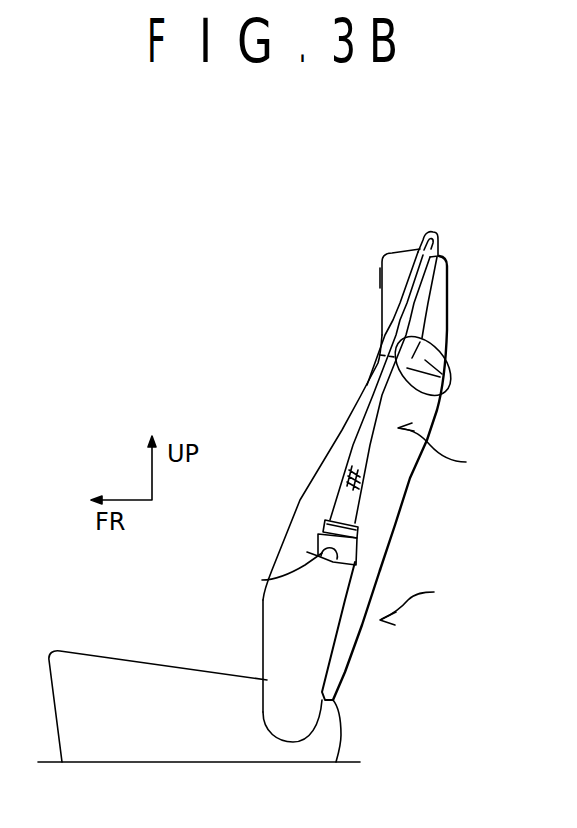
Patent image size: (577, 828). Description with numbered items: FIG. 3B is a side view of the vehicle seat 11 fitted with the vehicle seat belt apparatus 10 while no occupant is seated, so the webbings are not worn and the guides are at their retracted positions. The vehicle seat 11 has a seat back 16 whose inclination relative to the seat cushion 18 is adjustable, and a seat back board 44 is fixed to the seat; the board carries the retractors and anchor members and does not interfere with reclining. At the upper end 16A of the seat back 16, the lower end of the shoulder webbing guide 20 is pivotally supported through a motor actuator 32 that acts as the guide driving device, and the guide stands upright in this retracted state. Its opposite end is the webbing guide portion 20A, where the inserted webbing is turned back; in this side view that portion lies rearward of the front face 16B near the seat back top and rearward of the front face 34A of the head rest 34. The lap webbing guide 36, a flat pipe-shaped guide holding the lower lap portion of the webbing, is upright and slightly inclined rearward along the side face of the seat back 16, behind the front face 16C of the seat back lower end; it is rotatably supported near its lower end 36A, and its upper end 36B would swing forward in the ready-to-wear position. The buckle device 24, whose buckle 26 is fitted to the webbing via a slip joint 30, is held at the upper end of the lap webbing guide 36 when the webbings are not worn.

The vehicle seat belt apparatus 10 is at (280, 260).
The vehicle seat 11 is at (425, 600).
The seat back 16 is at (283, 555).
The upper end of the seat back 16A is at (380, 355).
The front face near the upper end of the seat back 16B is at (367, 388).
The front face of the lower end of the seat back 16C is at (295, 502).
The seat cushion 18 is at (162, 684).
The shoulder webbing guide 20 is at (436, 284).
The webbing guide portion 20A is at (440, 243).
The buckle device 24 is at (357, 547).
The buckle 26 is at (409, 553).
The slip joint 30 is at (358, 528).
The motor actuator 32 is at (445, 393).
The head rest 34 is at (436, 324).
The front face of the head rest 34A is at (381, 288).
The lap webbing guide 36 is at (314, 644).
The lower end of the lap webbing guide 36A is at (300, 717).
The upper end of the lap webbing guide 36B is at (262, 580).
The seat back board 44 is at (451, 449).